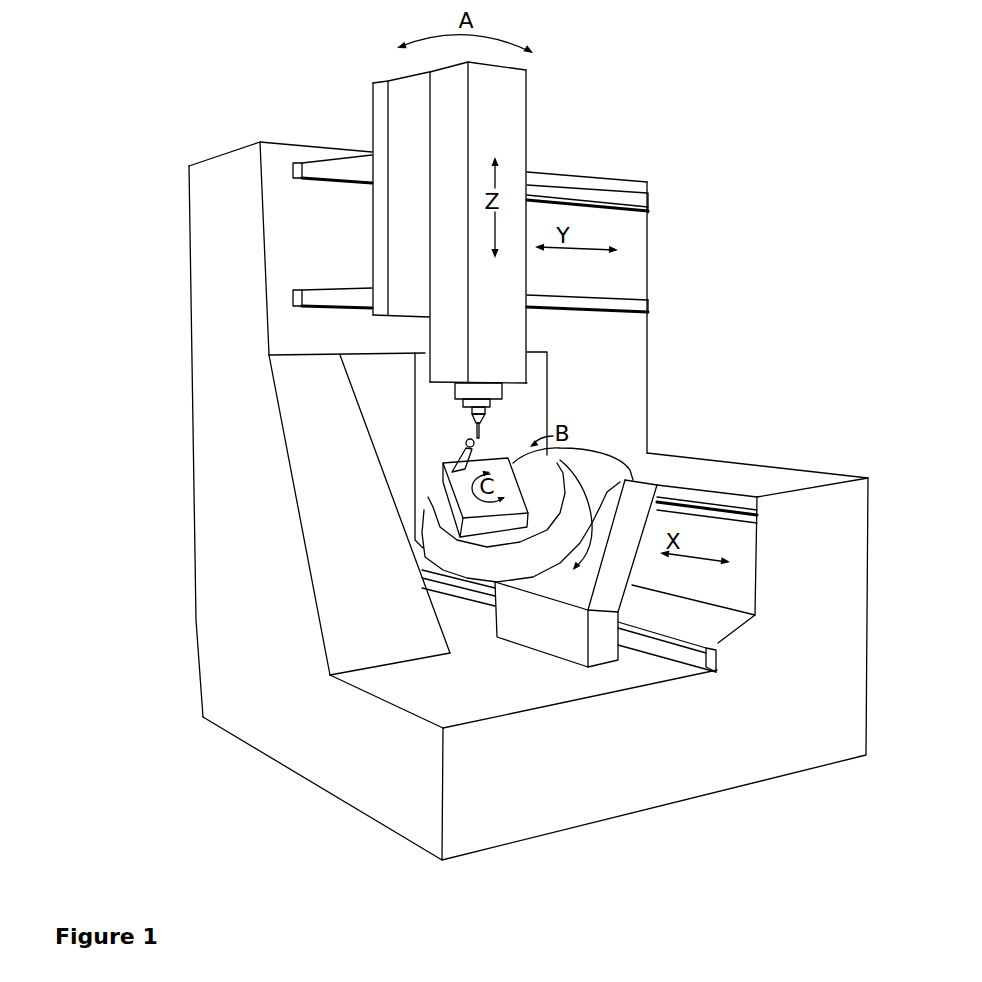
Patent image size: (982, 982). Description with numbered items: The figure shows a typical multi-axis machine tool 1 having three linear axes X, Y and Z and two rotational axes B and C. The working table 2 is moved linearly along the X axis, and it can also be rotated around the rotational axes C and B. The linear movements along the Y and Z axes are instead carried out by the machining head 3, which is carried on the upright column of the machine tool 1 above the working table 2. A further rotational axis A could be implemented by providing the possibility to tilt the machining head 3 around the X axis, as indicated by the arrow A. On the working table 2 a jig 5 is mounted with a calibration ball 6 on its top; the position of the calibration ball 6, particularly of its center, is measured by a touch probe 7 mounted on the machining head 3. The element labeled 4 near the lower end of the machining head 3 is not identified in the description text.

The multi-axis machine tool 1 is at (686, 196).
The working table 2 is at (453, 508).
The machining head 3 is at (438, 198).
The spindle 4 is at (453, 392).
The jig 5 is at (447, 467).
The calibration ball 6 is at (444, 446).
The touch probe 7 is at (479, 420).